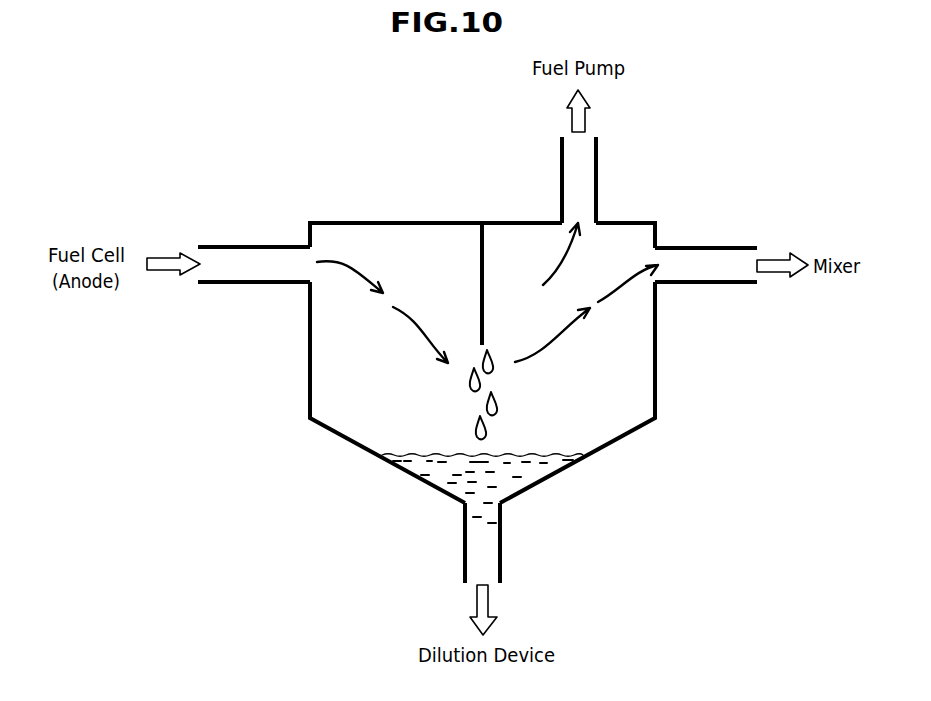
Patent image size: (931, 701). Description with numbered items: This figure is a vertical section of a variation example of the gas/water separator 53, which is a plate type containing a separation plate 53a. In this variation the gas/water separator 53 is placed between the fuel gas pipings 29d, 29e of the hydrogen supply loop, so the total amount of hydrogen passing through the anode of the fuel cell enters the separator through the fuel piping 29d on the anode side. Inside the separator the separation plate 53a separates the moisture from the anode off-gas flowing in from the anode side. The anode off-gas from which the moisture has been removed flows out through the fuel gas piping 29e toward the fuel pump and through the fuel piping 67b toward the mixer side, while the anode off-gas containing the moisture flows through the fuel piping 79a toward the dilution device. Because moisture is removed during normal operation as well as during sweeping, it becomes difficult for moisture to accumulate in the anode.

The gas/water separator 53 is at (352, 123).
The separation plate 53a is at (479, 252).
The fuel piping 29d is at (245, 247).
The fuel gas piping 29e is at (596, 168).
The fuel piping 67b is at (726, 247).
The fuel piping 79a is at (500, 549).